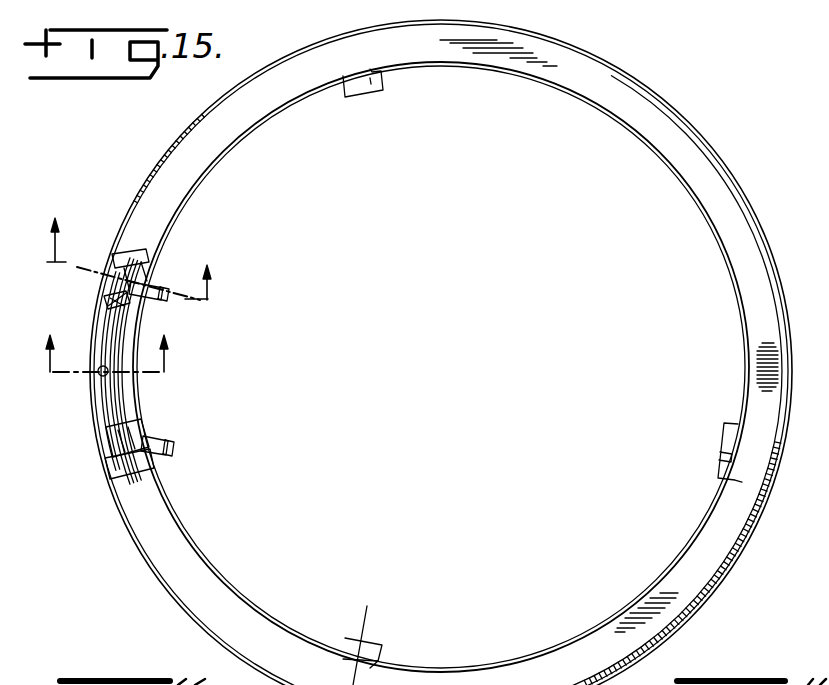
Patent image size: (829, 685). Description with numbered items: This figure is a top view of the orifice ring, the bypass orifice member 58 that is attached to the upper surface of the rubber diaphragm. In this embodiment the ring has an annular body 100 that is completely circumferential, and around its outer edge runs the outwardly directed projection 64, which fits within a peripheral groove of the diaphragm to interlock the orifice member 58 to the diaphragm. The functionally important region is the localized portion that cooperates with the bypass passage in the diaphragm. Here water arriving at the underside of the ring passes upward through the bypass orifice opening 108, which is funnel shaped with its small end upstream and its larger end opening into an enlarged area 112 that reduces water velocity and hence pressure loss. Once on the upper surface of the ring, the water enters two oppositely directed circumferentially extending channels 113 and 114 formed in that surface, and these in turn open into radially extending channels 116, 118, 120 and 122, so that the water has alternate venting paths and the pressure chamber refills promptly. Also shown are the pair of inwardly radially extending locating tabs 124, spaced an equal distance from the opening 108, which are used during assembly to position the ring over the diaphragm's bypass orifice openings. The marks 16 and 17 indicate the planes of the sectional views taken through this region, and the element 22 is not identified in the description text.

The bypass orifice member 58 is at (706, 113).
The outwardly directed projection 64 is at (160, 577).
The annular body 100 is at (718, 222).
The tab 22 is at (348, 602).
The section line 16 is at (102, 381).
The section line 17 is at (121, 288).
The bypass orifice opening 108 is at (100, 393).
The enlarged area 112 is at (98, 337).
The circumferentially extending channel 114 is at (103, 423).
The radially extending channel 116 is at (137, 257).
The circumferentially extending channel 113 is at (118, 266).
The radially extending channel 118 is at (130, 298).
The locating tab 124 is at (167, 287).
The radially extending channel 120 is at (140, 425).
The radially extending channel 122 is at (143, 477).